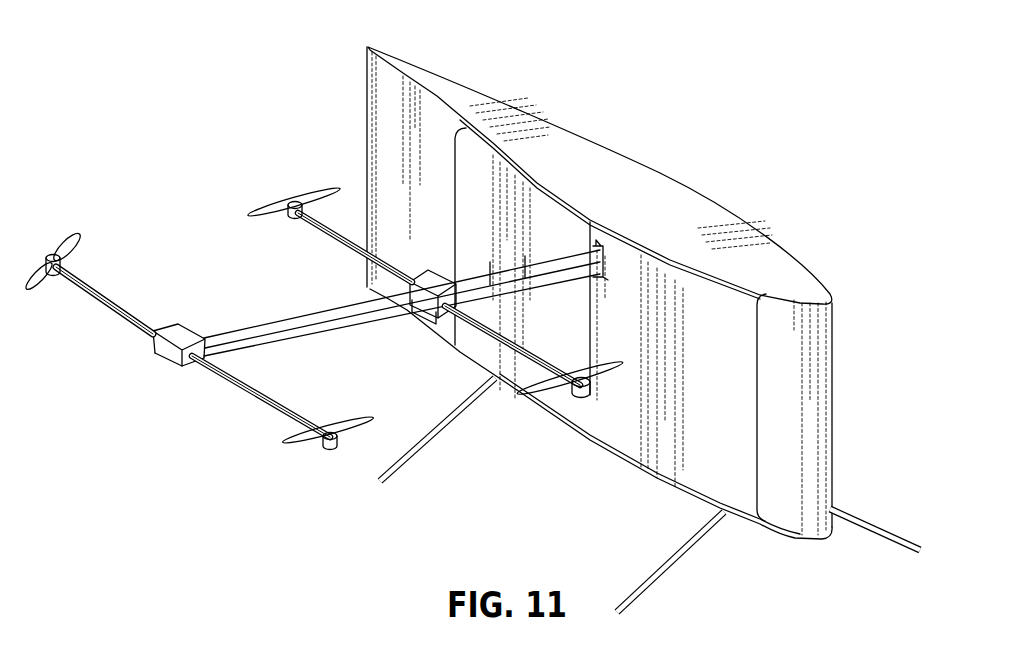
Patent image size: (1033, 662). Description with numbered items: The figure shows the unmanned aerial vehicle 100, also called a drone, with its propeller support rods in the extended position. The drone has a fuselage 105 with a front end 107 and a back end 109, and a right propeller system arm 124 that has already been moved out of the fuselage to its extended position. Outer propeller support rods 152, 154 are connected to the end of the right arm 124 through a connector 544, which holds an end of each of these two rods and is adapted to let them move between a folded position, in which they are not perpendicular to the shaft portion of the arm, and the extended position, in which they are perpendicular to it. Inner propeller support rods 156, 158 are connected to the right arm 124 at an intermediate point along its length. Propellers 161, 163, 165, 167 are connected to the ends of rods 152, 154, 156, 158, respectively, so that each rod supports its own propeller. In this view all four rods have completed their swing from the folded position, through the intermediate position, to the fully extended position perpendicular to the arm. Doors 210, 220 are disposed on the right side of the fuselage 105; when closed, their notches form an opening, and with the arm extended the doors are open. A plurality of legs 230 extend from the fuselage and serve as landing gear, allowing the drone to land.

The unmanned aerial vehicle 100 is at (474, 312).
The fuselage 105 is at (688, 187).
The front end 107 is at (832, 302).
The back end 109 is at (367, 47).
The right propeller system arm 124 is at (180, 364).
The outer propeller support rod 152 is at (264, 402).
The outer propeller support rod 154 is at (120, 303).
The inner propeller support rod 156 is at (482, 327).
The inner propeller support rod 158 is at (347, 248).
The propeller 161 is at (304, 443).
The propeller 163 is at (72, 233).
The propeller 165 is at (512, 394).
The propeller 167 is at (323, 187).
The door 210 is at (570, 412).
The door 220 is at (670, 473).
The legs 230 is at (412, 467).
The connector 544 is at (155, 352).